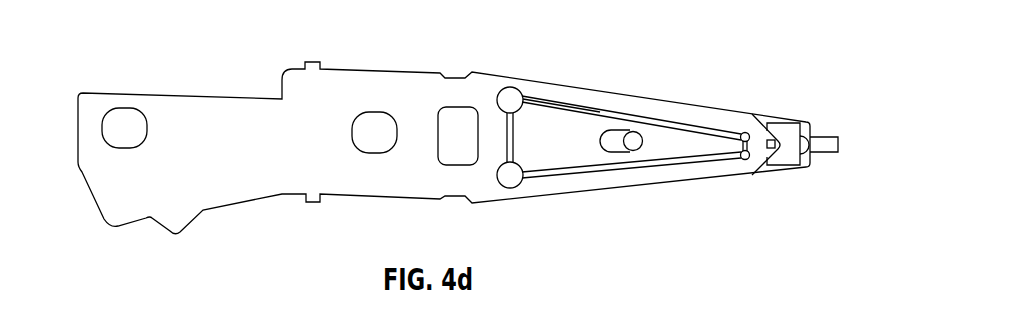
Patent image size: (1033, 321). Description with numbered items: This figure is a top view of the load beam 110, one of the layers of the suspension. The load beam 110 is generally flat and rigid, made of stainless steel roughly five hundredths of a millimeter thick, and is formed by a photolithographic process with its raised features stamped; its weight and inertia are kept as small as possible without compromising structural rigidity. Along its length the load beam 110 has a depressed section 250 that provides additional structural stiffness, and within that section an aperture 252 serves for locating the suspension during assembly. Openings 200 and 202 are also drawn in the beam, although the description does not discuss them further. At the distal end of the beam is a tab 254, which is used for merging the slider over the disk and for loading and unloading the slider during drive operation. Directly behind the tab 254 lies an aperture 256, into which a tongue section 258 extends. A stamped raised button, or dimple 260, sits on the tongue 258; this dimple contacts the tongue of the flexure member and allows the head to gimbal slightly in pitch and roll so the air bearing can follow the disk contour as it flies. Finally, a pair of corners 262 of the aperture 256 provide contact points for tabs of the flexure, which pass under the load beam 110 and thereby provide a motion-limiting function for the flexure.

The load beam 110 is at (358, 197).
The opening 200 is at (380, 112).
The slot 202 is at (643, 150).
The depressed section 250 is at (558, 128).
The aperture 252 is at (605, 138).
The tab 254 is at (831, 148).
The aperture 256 is at (785, 132).
The tongue section 258 is at (781, 152).
The dimple 260 is at (746, 133).
The corners 262 is at (747, 127).